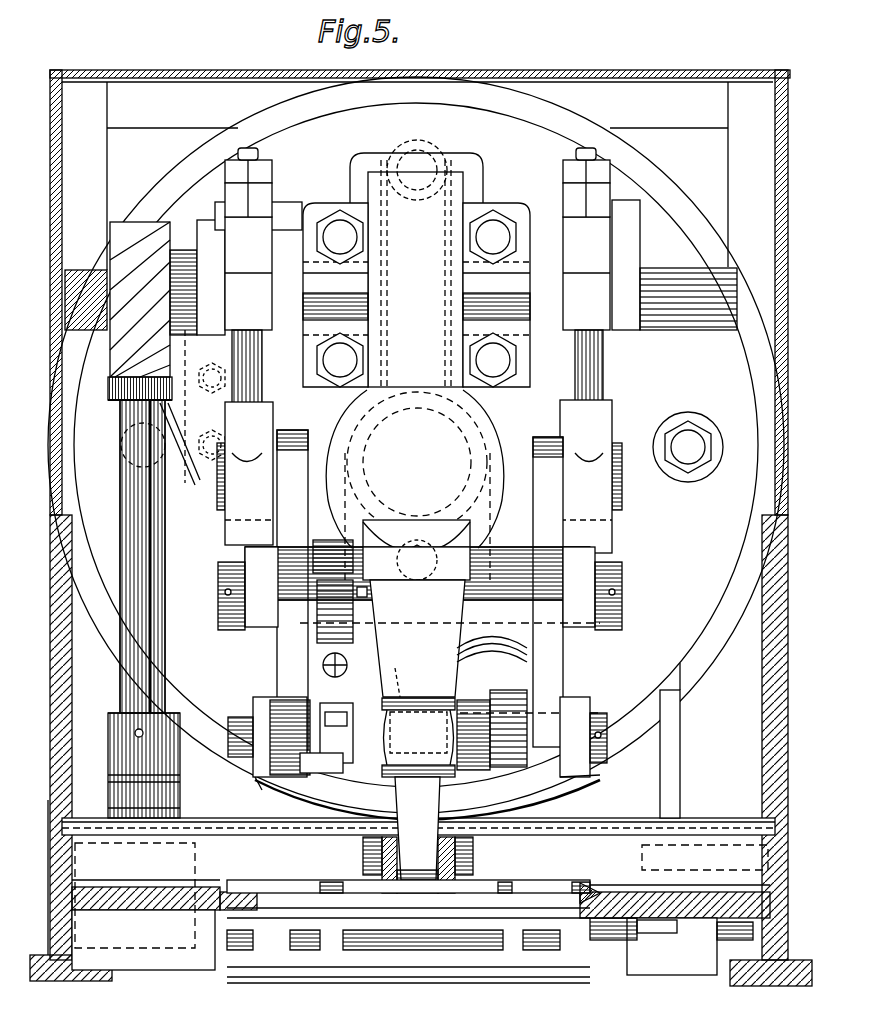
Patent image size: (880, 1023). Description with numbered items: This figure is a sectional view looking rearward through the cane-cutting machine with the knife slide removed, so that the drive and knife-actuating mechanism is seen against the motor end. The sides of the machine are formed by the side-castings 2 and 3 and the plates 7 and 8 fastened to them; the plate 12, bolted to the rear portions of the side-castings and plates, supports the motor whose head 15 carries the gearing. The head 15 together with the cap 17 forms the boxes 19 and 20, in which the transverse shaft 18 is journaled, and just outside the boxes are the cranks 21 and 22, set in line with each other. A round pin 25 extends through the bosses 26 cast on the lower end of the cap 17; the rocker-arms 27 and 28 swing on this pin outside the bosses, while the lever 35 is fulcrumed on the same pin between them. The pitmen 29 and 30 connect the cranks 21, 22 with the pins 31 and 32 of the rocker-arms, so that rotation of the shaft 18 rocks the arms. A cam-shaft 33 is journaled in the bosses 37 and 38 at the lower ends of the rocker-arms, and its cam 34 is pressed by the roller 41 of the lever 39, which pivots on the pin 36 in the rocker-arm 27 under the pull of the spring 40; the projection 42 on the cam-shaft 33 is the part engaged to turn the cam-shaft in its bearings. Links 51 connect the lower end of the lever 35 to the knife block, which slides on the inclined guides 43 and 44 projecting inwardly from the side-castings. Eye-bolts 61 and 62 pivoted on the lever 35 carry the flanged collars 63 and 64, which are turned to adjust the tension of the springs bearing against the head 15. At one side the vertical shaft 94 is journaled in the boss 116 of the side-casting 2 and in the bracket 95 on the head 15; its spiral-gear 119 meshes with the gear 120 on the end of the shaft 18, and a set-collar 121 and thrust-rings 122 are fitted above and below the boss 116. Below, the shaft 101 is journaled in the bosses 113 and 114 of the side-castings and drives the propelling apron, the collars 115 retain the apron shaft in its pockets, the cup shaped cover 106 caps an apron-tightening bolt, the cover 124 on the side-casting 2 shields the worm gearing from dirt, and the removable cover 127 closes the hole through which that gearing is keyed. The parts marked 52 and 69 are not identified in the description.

The side-casting 2 is at (54, 717).
The side-casting 3 is at (788, 885).
The plate 7 is at (54, 437).
The plate 8 is at (786, 497).
The plate 12 is at (216, 822).
The head 15 is at (416, 445).
The cap 17 is at (352, 168).
The shaft 18 is at (688, 308).
The box 19 is at (335, 295).
The box 20 is at (496, 295).
The crank 21 is at (208, 220).
The crank 22 is at (632, 238).
The round pin 25 is at (220, 580).
The bosses 26 is at (487, 555).
The rocker-arm 27 is at (290, 525).
The rocker-arm 28 is at (556, 523).
The pitman 29 is at (272, 182).
The pitman 30 is at (612, 172).
The pin 31 is at (216, 495).
The pin 32 is at (624, 492).
The cam-shaft 33 is at (228, 750).
The cam 34 is at (300, 795).
The lever 35 is at (417, 638).
The pin 36 is at (368, 590).
The boss 37 is at (252, 793).
The boss 38 is at (588, 775).
The lever 39 is at (348, 723).
The spring 40 is at (280, 682).
The roller 41 is at (325, 774).
The projection 42 is at (508, 717).
The guide 43 is at (240, 885).
The guide 44 is at (586, 885).
The links 51 is at (416, 859).
The cylinder 52 is at (420, 698).
The eye-bolt 61 is at (404, 674).
The eye-bolt 62 is at (478, 710).
The collar 63 is at (349, 668).
The collar 64 is at (492, 657).
The stem 69 is at (417, 828).
The vertical shaft 94 is at (150, 555).
The bracket 95 is at (108, 385).
The shaft 101 is at (680, 928).
The cup shaped cover 106 is at (770, 928).
The boss 113 is at (222, 938).
The boss 114 is at (655, 940).
The collars 115 is at (735, 941).
The boss 116 is at (125, 803).
The spiral-gear 119 is at (90, 270).
The spiral-gear 120 is at (135, 222).
The set-collar 121 is at (112, 738).
The thrust-rings 122 is at (110, 779).
The cover 124 is at (164, 919).
The removable cover 127 is at (50, 862).